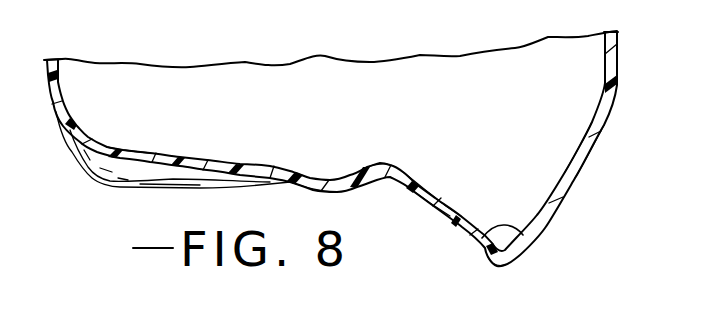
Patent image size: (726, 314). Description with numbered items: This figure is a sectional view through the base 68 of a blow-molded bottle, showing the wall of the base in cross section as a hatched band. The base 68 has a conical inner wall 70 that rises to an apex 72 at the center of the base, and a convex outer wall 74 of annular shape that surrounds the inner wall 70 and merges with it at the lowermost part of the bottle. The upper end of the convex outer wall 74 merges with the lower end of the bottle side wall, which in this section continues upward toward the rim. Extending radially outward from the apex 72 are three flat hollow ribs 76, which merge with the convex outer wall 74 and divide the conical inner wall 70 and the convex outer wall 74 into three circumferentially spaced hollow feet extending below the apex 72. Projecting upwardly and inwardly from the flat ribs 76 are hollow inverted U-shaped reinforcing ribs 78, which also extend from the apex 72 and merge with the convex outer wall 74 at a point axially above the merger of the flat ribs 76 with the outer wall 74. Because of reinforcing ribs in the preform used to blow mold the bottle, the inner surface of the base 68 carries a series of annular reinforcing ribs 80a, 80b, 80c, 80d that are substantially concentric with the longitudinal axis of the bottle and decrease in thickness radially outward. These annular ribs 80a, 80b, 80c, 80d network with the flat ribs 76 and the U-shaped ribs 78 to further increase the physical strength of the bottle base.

The base 68 is at (573, 202).
The conical inner wall 70 is at (434, 217).
The apex 72 is at (326, 194).
The convex outer wall 74 is at (560, 190).
The hollow ribs 76 is at (133, 188).
The inverted U-shaped reinforcing ribs 78 is at (129, 151).
The annular reinforcing rib 80a is at (524, 236).
The annular reinforcing rib 80b is at (450, 206).
The annular reinforcing rib 80c is at (420, 180).
The annular reinforcing rib 80d is at (366, 168).